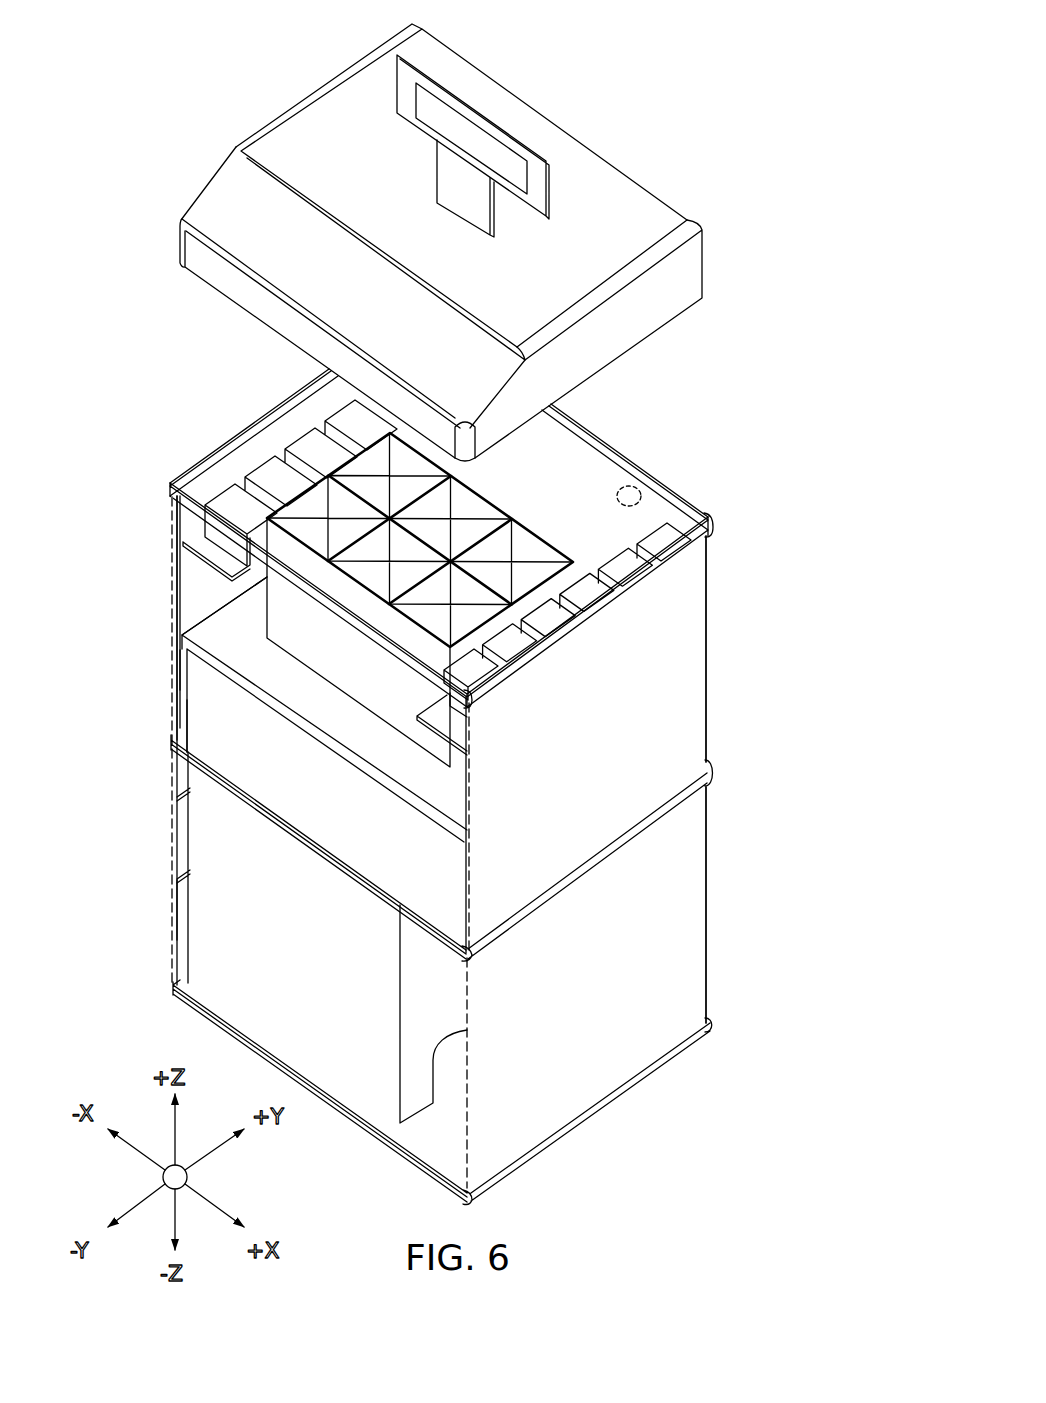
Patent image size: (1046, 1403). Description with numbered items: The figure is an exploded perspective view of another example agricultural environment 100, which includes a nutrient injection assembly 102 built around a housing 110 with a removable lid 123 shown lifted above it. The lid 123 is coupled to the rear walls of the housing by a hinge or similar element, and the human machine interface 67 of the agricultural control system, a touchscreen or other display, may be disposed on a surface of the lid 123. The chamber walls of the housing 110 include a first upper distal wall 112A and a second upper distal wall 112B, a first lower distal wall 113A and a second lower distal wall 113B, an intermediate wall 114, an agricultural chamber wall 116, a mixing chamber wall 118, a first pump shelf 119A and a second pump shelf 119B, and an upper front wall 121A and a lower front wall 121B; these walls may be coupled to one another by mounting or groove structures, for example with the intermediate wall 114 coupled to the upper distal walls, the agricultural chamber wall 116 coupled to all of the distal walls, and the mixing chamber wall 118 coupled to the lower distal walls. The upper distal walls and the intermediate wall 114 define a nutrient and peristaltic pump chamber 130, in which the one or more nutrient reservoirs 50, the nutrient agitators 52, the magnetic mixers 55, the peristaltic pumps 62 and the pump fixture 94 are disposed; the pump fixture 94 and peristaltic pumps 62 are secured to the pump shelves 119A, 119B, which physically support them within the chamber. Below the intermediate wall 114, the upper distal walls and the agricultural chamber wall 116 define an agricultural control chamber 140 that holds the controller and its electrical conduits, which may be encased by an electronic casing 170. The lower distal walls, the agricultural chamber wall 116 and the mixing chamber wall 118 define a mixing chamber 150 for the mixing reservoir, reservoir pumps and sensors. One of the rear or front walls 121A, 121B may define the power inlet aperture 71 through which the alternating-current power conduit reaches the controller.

The agricultural environment 100 is at (718, 67).
The nutrient injection assembly 102 is at (772, 427).
The housing 110 is at (728, 647).
The lid 123 is at (577, 153).
The human machine interface (HMI) 67 is at (492, 118).
The nutrient reservoirs 50 is at (550, 498).
The nutrient agitators 52 is at (420, 540).
The magnetic mixers 55 is at (420, 540).
The peristaltic pumps 62 is at (642, 552).
The pump fixture 94 is at (448, 550).
The power inlet aperture 71 is at (644, 491).
The first upper distal wall 112A is at (203, 577).
The second upper distal wall 112B is at (682, 705).
The first lower distal wall 113A is at (181, 849).
The second lower distal wall 113B is at (682, 958).
The intermediate wall 114 is at (214, 623).
The agricultural chamber wall 116 is at (170, 742).
The mixing chamber wall 118 is at (427, 1137).
The first pump shelf 119A is at (182, 527).
The second pump shelf 119B is at (470, 727).
The upper front wall 121A is at (470, 820).
The lower front wall 121B is at (470, 1072).
The nutrient and peristaltic pump (NPP) chamber 130 is at (203, 623).
The agricultural control chamber 140 is at (172, 668).
The mixing chamber 150 is at (172, 910).
The electronic casing 170 is at (198, 703).